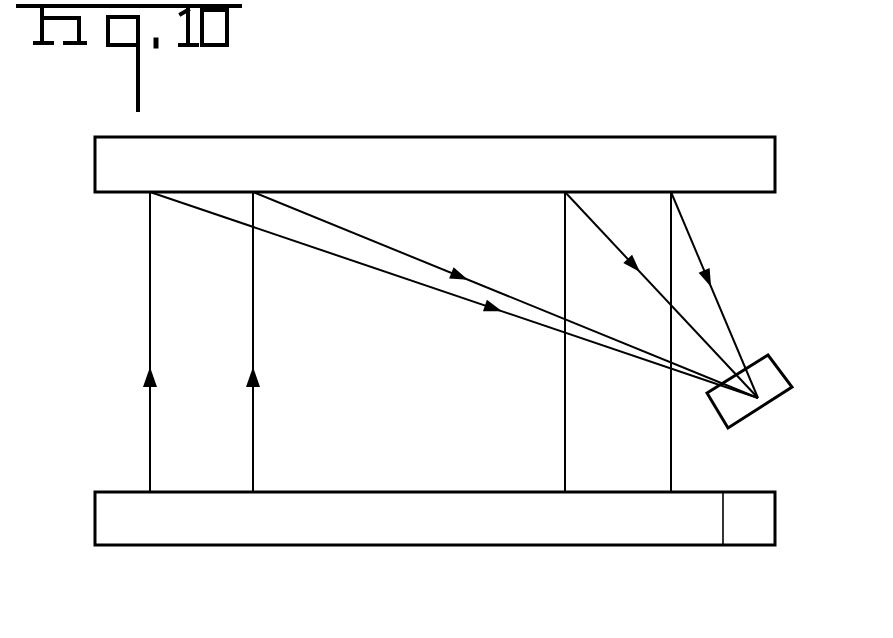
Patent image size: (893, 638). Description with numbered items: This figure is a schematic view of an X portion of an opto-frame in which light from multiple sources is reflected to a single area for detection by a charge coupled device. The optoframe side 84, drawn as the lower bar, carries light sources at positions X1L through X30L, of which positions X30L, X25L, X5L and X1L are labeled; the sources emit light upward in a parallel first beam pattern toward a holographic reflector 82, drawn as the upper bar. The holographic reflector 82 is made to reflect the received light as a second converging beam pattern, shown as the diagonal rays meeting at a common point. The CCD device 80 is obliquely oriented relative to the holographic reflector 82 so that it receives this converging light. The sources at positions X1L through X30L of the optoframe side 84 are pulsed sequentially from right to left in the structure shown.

The CCD device 80 is at (775, 367).
The holographic reflector 82 is at (513, 190).
The optoframe side 84 is at (503, 532).
The light source position X30L is at (152, 370).
The light source position X25L is at (250, 495).
The light source position X5L is at (565, 493).
The light source position X1L is at (672, 493).